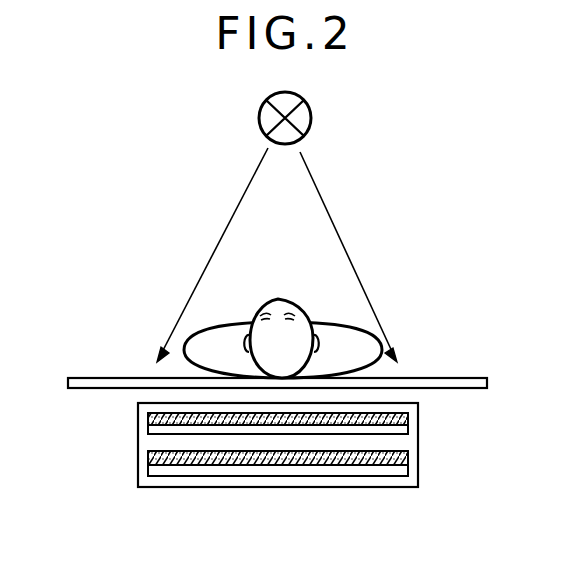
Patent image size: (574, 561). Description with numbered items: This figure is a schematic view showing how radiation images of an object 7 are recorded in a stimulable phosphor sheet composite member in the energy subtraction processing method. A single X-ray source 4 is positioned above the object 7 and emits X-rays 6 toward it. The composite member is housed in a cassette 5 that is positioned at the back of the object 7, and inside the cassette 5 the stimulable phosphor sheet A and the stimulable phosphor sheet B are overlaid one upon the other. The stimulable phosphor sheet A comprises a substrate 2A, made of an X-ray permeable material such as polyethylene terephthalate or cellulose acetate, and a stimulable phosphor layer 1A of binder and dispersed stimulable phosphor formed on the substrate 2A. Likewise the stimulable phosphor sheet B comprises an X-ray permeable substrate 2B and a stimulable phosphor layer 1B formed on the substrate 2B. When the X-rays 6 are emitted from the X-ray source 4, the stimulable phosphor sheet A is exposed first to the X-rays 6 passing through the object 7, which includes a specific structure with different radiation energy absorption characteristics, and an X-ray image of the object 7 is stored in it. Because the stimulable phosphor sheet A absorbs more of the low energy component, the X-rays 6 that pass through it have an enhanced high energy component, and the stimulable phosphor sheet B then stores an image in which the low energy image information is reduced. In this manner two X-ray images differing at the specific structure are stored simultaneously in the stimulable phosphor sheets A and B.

The X-ray source 4 is at (312, 122).
The X-rays 6 is at (356, 259).
The object 7 is at (301, 326).
The cassette 5 is at (368, 490).
The stimulable phosphor layer 1A is at (149, 417).
The substrate 2A is at (149, 429).
The stimulable phosphor layer 1B is at (149, 458).
The substrate 2B is at (149, 470).
The stimulable phosphor sheet A is at (410, 420).
The stimulable phosphor sheet B is at (410, 462).